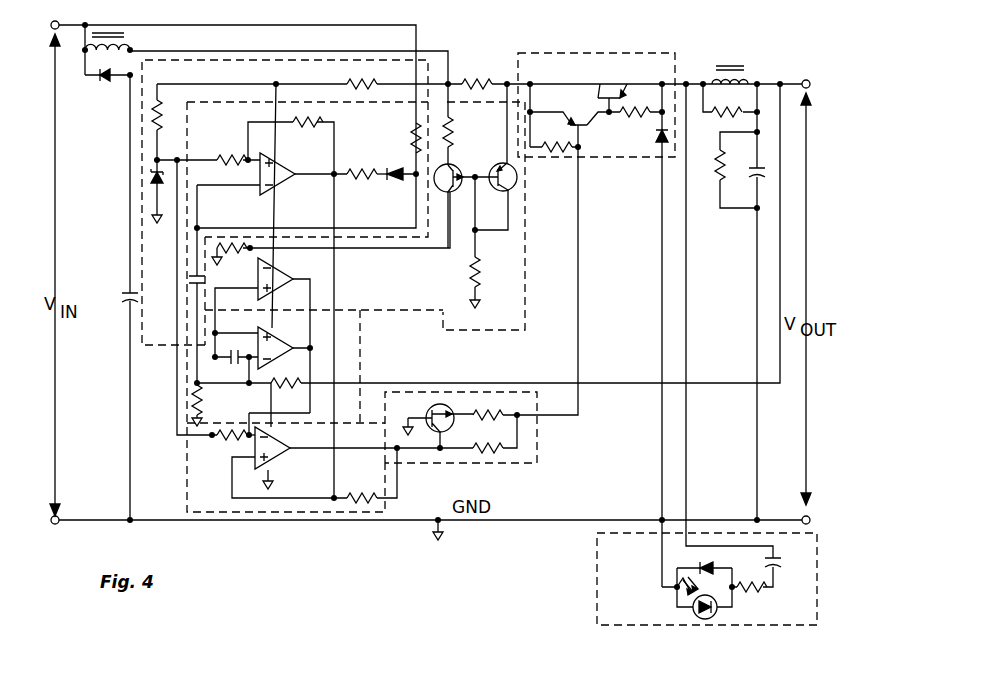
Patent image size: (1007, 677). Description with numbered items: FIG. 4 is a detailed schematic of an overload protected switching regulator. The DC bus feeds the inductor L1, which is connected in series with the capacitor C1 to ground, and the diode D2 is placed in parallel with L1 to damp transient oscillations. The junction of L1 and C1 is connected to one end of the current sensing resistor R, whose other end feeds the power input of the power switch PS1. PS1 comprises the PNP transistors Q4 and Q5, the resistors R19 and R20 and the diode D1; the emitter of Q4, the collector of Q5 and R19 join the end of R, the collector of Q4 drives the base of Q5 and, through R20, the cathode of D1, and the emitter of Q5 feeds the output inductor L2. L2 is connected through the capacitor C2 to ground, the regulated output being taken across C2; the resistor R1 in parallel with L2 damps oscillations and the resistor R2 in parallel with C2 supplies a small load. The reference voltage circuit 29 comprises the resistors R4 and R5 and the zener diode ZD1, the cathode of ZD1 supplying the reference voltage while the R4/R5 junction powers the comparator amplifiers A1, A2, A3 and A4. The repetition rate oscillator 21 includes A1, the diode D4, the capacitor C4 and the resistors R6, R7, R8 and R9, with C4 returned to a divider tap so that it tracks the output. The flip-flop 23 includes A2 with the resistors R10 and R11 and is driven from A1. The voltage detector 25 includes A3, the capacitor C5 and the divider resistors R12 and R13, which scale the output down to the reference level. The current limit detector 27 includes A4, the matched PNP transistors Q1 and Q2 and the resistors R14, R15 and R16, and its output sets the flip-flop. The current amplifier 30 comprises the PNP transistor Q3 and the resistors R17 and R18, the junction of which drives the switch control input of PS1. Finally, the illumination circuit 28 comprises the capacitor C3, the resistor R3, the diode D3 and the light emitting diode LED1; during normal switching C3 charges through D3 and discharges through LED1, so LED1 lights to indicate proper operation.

The repetition rate oscillator 21 is at (360, 218).
The flip-flop 23 is at (322, 503).
The voltage detector 25 is at (350, 357).
The current limit detector 27 is at (508, 251).
The illumination circuit 28 is at (608, 564).
The reference voltage circuit 29 is at (152, 332).
The current amplifier 30 is at (527, 455).
The power switch PS1 is at (558, 71).
The inductor L1 is at (124, 35).
The inductor L2 is at (730, 64).
The diode D1 is at (657, 135).
The diode D2 is at (100, 87).
The diode D3 is at (704, 560).
The diode D4 is at (399, 187).
The zener diode ZD1 is at (148, 172).
The capacitor C1 is at (120, 297).
The capacitor C2 is at (749, 300).
The capacitor C3 is at (785, 566).
The capacitor C4 is at (195, 280).
The capacitor C5 is at (232, 360).
The current sensing resistor R is at (477, 71).
The resistor R1 is at (730, 99).
The resistor R2 is at (724, 170).
The resistor R3 is at (752, 592).
The resistor R4 is at (397, 75).
The resistor R5 is at (249, 122).
The resistor R6 is at (231, 148).
The resistor R7 is at (289, 145).
The resistor R8 is at (367, 161).
The resistor R9 is at (405, 138).
The resistor R10 is at (232, 447).
The resistor R11 is at (364, 338).
The resistor R12 is at (516, 258).
The resistor R13 is at (200, 395).
The resistor R14 is at (468, 141).
The resistor R15 is at (493, 242).
The resistor R16 is at (331, 234).
The resistor R17 is at (525, 283).
The resistor R18 is at (495, 434).
The resistor R19 is at (555, 139).
The resistor R20 is at (637, 104).
The comparator amplifier A1 is at (298, 167).
The comparator amplifier A2 is at (282, 467).
The comparator amplifier A3 is at (264, 343).
The comparator amplifier A4 is at (280, 268).
The PNP transistor Q1 is at (456, 206).
The PNP transistor Q2 is at (494, 158).
The PNP transistor Q3 is at (432, 422).
The PNP transistor Q4 is at (568, 114).
The PNP transistor Q5 is at (612, 91).
The light emitting diode LED1 is at (670, 593).